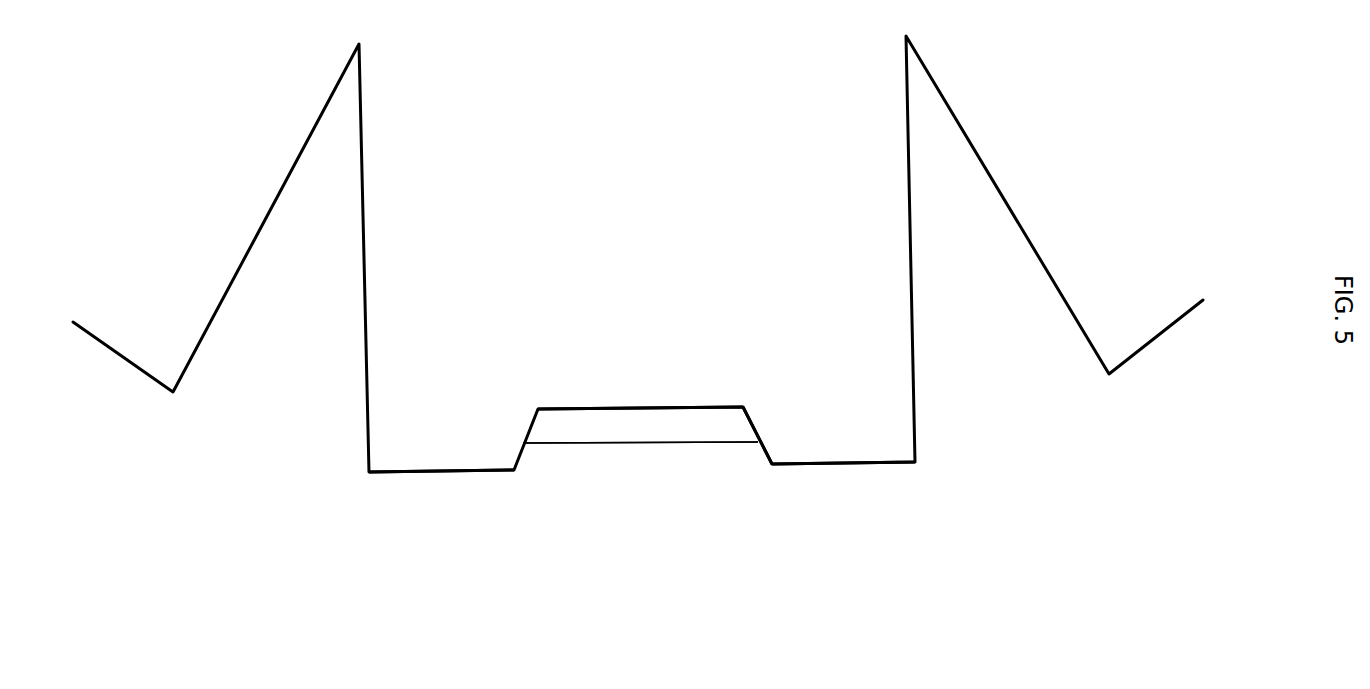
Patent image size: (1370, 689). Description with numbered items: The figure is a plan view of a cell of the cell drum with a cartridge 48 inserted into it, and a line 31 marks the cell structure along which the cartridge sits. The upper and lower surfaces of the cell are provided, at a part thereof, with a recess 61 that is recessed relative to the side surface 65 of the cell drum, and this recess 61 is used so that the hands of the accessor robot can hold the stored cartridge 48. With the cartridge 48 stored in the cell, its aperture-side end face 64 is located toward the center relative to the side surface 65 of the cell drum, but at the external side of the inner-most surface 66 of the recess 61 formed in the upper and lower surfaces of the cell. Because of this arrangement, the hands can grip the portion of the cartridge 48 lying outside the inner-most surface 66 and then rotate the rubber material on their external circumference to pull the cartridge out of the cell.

The substrate step surface 31 is at (390, 493).
The cartridge 48 is at (610, 505).
The recessed area 61 is at (708, 470).
The end face 64 is at (616, 544).
The side surface 65 is at (884, 501).
The inner-most surface 66 is at (671, 354).